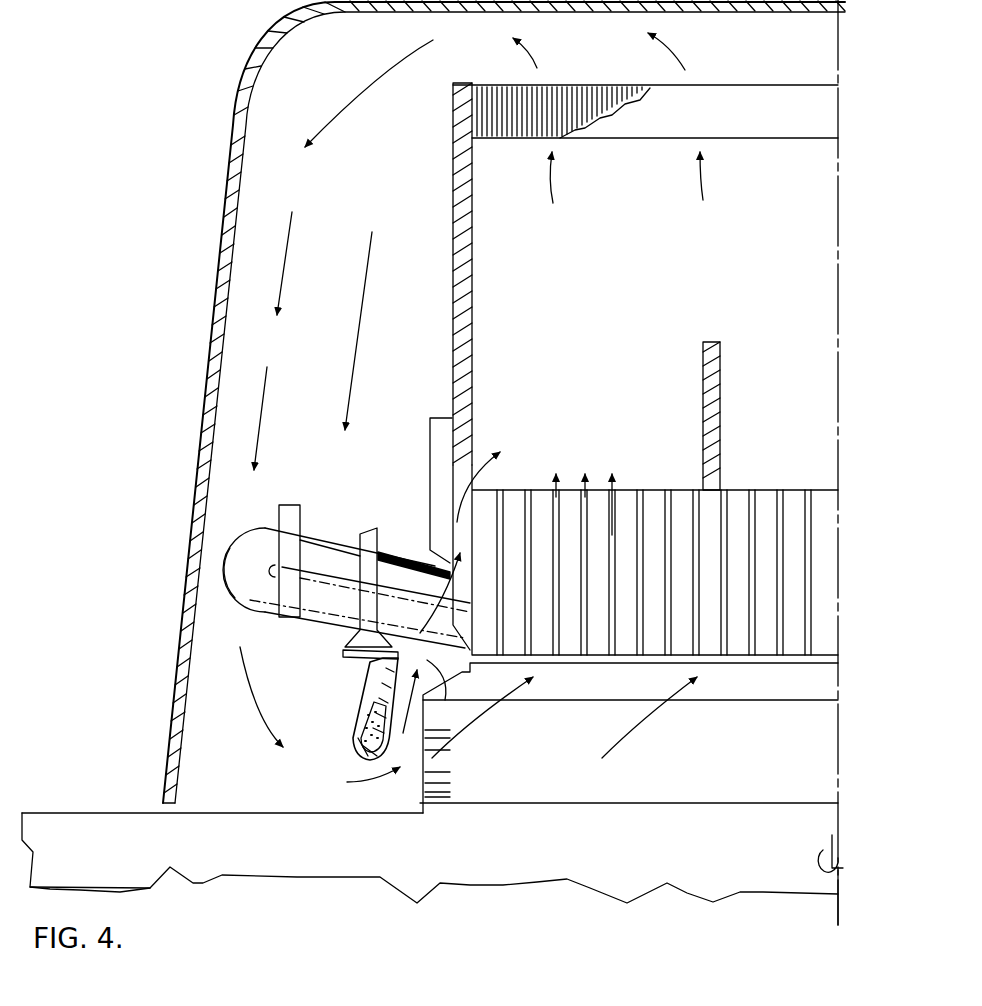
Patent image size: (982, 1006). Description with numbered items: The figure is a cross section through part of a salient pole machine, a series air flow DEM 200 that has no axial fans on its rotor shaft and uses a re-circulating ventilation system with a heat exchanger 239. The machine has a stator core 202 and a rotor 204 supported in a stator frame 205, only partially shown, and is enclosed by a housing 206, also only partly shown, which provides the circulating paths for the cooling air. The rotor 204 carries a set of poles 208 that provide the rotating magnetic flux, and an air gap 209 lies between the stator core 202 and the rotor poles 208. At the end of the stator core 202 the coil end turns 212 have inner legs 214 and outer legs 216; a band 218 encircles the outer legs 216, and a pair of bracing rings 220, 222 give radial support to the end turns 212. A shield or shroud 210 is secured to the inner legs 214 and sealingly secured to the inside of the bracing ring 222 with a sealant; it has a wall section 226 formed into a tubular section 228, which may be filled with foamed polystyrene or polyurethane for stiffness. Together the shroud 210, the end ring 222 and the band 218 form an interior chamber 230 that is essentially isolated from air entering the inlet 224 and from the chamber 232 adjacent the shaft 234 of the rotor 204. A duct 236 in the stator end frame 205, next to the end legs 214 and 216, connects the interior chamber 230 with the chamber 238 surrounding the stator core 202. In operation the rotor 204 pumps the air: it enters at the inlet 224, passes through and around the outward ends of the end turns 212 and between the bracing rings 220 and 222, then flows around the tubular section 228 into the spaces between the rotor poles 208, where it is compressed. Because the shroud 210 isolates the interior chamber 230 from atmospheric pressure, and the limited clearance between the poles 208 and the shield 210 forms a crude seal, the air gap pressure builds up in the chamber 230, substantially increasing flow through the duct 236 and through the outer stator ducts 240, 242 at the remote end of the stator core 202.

The series air flow DEM 200 is at (350, 940).
The stator core 202 is at (712, 553).
The rotor 204 is at (807, 828).
The stator frame 205 is at (462, 310).
The housing 206 is at (227, 200).
The poles 208 is at (810, 757).
The air gap 209 is at (738, 660).
The shield or shroud 210 is at (372, 684).
The end turns 212 is at (256, 555).
The inner legs 214 is at (412, 625).
The outer legs 216 is at (318, 555).
The band 218 is at (385, 551).
The bracing ring 220 is at (295, 505).
The bracing ring 222 is at (364, 528).
The inlet 224 is at (397, 184).
The wall section 226 is at (388, 742).
The tubular section 228 is at (356, 745).
The interior chamber 230 is at (450, 599).
The chamber 232 is at (260, 790).
The shaft 234 is at (203, 842).
The duct 236 is at (470, 475).
The chamber 238 is at (690, 296).
The heat exchanger 239 is at (750, 95).
The outer stator duct 240 is at (505, 485).
The outer stator duct 242 is at (582, 480).